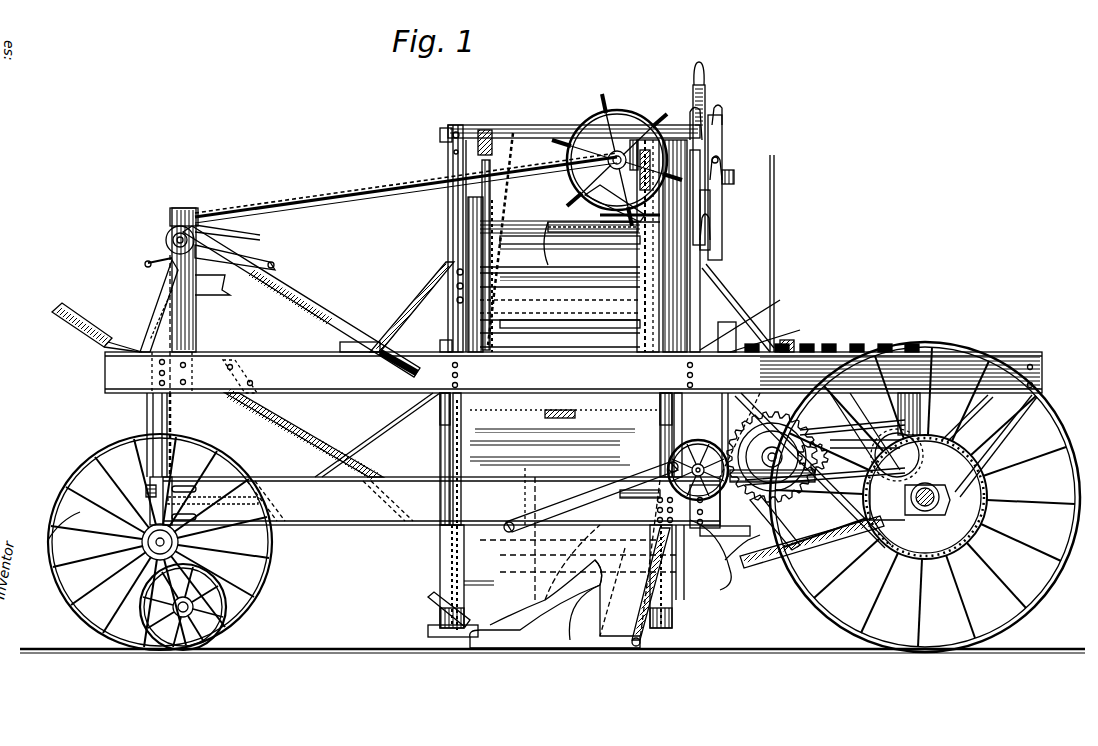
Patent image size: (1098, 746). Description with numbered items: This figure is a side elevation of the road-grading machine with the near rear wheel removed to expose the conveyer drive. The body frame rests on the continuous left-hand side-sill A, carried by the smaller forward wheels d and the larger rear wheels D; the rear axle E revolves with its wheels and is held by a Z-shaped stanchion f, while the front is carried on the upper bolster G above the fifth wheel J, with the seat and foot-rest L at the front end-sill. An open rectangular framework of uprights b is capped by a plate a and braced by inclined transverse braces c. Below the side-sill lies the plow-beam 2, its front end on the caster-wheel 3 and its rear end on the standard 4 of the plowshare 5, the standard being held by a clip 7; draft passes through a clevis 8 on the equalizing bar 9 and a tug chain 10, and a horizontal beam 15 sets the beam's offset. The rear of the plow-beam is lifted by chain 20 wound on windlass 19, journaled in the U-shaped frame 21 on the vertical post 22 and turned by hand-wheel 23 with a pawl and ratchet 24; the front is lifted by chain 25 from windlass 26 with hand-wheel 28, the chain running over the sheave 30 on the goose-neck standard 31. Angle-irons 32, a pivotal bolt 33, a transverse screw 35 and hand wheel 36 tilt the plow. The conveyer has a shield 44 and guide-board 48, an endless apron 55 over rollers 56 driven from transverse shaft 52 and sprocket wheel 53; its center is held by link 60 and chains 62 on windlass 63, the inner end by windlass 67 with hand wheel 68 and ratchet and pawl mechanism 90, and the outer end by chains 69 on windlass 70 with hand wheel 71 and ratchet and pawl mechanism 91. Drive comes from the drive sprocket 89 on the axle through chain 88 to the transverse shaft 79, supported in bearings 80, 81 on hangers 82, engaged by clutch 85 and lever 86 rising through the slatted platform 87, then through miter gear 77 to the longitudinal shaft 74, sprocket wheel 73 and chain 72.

The continuous side-sill A is at (125, 368).
The plow-beam 2 is at (441, 501).
The caster-wheel 3 is at (545, 628).
The standard 4 is at (598, 556).
The plowshare 5 is at (232, 620).
The clip 7 is at (580, 508).
The clevis 8 is at (305, 308).
The equalizing bar 9 is at (920, 516).
The tug chain 10 is at (714, 562).
The horizontal beam 15 is at (415, 526).
The windlass 19 is at (591, 243).
The chain 20 is at (570, 249).
The U-shaped metal frame 21 is at (597, 195).
The vertical post 22 is at (635, 330).
The hand-wheel 23 is at (722, 157).
The pawl and ratchet 24 is at (734, 176).
The chain 25 is at (340, 196).
The windlass 26 is at (612, 130).
The hand-wheel 28 is at (633, 138).
The sheave 30 is at (165, 240).
The standard 31 is at (190, 335).
The angle-irons 32 is at (705, 517).
The pivotal bolt 33 is at (680, 560).
The transverse screw 35 is at (640, 500).
The hand wheel 36 is at (668, 462).
The shield 44 is at (428, 597).
The guide-board 48 is at (470, 548).
The transverse shaft 52 is at (770, 340).
The sprocket wheel 53 is at (782, 300).
The endless apron 55 is at (563, 410).
The rollers 56 is at (555, 464).
The link 60 is at (600, 432).
The chains 62 is at (455, 418).
The windlass 63 is at (560, 244).
The windlass 67 is at (470, 230).
The hand wheel 68 is at (706, 255).
The chains 69 is at (646, 132).
The windlass 70 is at (486, 130).
The hand wheel 71 is at (708, 100).
The chain 72 is at (793, 318).
The sprocket wheel 73 is at (717, 435).
The longitudinal shaft 74 is at (869, 431).
The miter gear 77 is at (825, 471).
The transverse shaft 79 is at (772, 452).
The bearing 80 is at (813, 433).
The bearing 81 is at (766, 522).
The hangers 82 is at (858, 545).
The clutch 85 is at (876, 455).
The lever 86 is at (776, 268).
The slatted platform 87 is at (885, 344).
The chain 88 is at (805, 470).
The drive sprocket 89 is at (960, 532).
The ratchet and pawl mechanism 90 is at (445, 262).
The ratchet and pawl mechanism 91 is at (445, 138).
The plate a is at (520, 128).
The upright b is at (448, 258).
The transverse braces c is at (470, 165).
The forward wheels d is at (62, 505).
The Z-shaped stanchion f is at (960, 425).
The rear wheels D is at (1075, 516).
The rear axle E is at (940, 497).
The upper bolster G is at (175, 430).
The fifth wheel J is at (70, 525).
The seat and foot-rest L is at (97, 320).